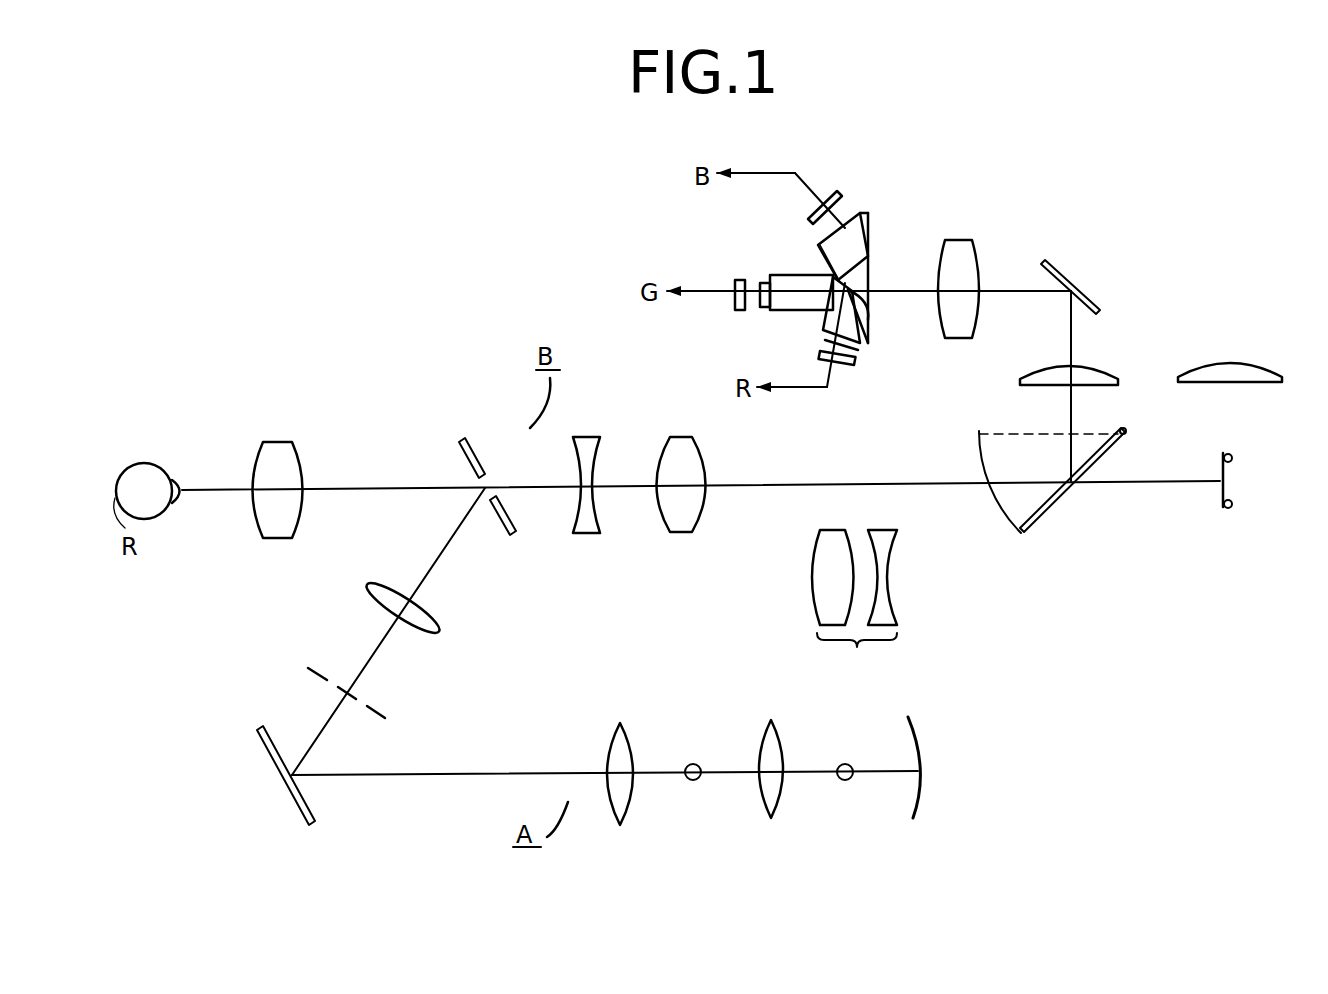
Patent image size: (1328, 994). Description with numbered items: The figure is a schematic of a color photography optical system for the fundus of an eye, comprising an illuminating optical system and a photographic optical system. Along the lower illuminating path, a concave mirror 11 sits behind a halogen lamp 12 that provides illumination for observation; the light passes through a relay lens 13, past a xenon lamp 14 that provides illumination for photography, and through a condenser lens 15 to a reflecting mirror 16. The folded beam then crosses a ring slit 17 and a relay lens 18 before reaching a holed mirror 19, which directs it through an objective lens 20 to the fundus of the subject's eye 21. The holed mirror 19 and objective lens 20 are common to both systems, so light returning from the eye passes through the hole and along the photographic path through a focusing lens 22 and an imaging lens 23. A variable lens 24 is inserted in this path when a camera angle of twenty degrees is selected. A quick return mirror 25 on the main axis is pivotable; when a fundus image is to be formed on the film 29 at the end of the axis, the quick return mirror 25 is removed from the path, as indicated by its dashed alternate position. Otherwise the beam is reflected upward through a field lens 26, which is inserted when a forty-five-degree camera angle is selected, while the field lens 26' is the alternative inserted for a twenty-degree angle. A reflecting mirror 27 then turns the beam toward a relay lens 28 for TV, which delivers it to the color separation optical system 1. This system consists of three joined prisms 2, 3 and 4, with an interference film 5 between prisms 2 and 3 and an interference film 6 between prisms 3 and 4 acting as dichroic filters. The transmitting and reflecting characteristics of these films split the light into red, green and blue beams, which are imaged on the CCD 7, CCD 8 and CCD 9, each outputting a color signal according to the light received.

The color separation optical system 1 is at (848, 262).
The prism 2 is at (795, 302).
The prism 3 is at (868, 330).
The prism 4 is at (862, 238).
The interference film 5 is at (817, 292).
The interference film 6 is at (867, 303).
The CCD 7 is at (847, 364).
The CCD 8 is at (734, 300).
The CCD 9 is at (828, 200).
The concave mirror 11 is at (920, 737).
The halogen lamp 12 is at (848, 781).
The relay lens 13 is at (778, 803).
The xenon lamp 14 is at (700, 781).
The condenser lens 15 is at (628, 807).
The reflecting mirror 16 is at (293, 800).
The ring slit 17 is at (313, 673).
The relay lens 18 is at (442, 628).
The holed mirror 19 is at (468, 438).
The objective lens 20 is at (281, 442).
The subject's eye 21 is at (150, 464).
The focusing lens 22 is at (583, 535).
The imaging lens 23 is at (683, 533).
The variable lens 24 is at (854, 604).
The quick return mirror 25 is at (1045, 513).
The field lens 26 is at (1077, 353).
The field lens 26' is at (1230, 346).
The reflecting mirror 27 is at (1058, 268).
The relay lens for TV 28 is at (958, 240).
The film 29 is at (1232, 465).